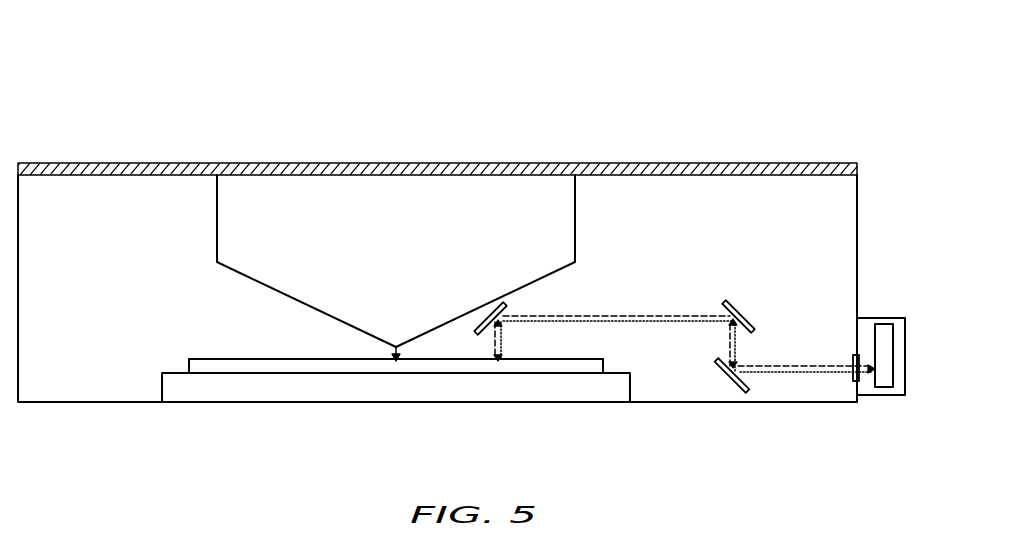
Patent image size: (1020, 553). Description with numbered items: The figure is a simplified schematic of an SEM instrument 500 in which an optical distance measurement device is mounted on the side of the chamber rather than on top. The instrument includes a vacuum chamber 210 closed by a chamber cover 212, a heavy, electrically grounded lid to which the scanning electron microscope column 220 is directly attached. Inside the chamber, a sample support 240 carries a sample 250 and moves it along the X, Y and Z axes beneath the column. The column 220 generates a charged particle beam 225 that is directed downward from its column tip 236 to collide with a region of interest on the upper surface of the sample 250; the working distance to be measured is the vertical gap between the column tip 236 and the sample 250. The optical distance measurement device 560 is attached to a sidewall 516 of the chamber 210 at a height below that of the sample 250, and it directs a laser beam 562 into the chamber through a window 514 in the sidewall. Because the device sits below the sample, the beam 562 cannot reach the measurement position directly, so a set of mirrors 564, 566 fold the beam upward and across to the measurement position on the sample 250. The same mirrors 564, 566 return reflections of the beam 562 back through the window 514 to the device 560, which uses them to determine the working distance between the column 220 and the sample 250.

The SEM instrument 500 is at (217, 80).
The vacuum chamber 210 is at (81, 389).
The chamber cover 212 is at (38, 162).
The scanning electron microscope column 220 is at (400, 193).
The charged particle beam 225 is at (393, 352).
The column tip 236 is at (421, 328).
The sample support 240 is at (421, 397).
The sample 250 is at (188, 366).
The sidewall 516 is at (853, 252).
The window 514 is at (853, 357).
The optical distance measurement device 560 is at (870, 318).
The laser beam 562 is at (717, 378).
The mirror 564 is at (727, 300).
The mirror 566 is at (508, 303).